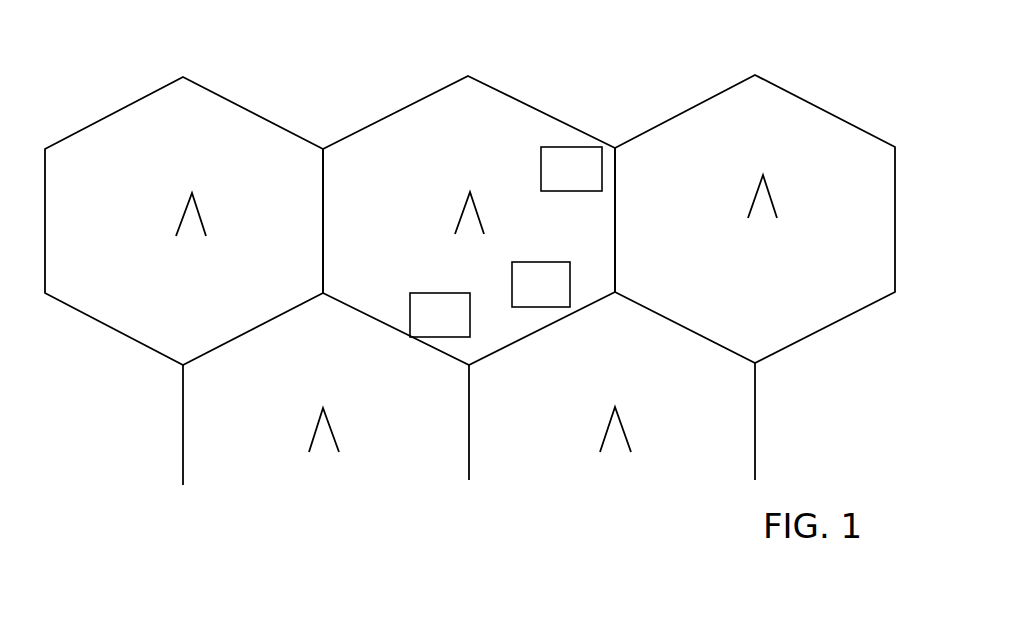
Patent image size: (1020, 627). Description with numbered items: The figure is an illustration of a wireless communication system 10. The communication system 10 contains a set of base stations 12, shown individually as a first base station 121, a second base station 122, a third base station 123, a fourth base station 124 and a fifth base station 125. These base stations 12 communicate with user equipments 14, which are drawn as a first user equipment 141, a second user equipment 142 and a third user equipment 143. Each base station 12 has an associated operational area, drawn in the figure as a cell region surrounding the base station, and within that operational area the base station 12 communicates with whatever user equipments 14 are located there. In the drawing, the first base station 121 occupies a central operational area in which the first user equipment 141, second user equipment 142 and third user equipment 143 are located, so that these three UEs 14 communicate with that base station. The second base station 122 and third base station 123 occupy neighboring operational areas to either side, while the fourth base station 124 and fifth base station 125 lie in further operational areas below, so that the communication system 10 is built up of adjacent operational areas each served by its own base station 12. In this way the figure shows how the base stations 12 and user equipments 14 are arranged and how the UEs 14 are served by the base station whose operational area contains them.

The wireless communication system 10 is at (761, 56).
The base station 12 is at (466, 280).
The first base station 121 is at (469, 278).
The second base station 122 is at (755, 277).
The third base station 123 is at (90, 385).
The fourth base station 124 is at (150, 430).
The fifth base station 125 is at (642, 429).
The user equipment 14 is at (492, 242).
The first user equipment 141 is at (544, 169).
The second user equipment 142 is at (521, 277).
The third user equipment 143 is at (426, 299).